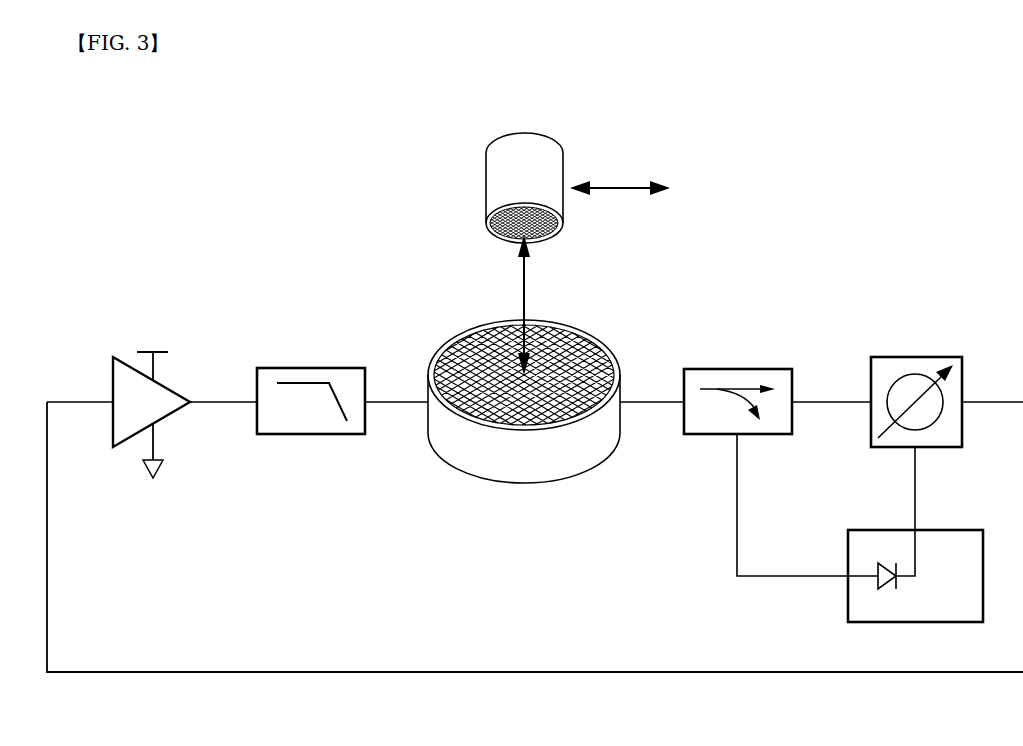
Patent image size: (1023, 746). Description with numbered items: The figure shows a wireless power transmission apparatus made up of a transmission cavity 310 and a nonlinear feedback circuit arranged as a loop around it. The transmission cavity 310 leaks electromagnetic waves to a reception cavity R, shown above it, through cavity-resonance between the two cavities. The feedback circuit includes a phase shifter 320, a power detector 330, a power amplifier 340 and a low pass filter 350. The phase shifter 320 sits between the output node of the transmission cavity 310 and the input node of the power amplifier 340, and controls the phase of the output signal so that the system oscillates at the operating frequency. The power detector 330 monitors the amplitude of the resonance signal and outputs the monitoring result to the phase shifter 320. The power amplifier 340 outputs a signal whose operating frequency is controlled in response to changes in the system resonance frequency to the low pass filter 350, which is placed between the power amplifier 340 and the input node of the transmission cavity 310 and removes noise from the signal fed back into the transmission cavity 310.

The reception cavity R is at (537, 133).
The transmission cavity 310 is at (583, 330).
The phase shifter 320 is at (915, 356).
The power detector 330 is at (937, 530).
The power amplifier 340 is at (167, 383).
The low pass filter 350 is at (312, 368).